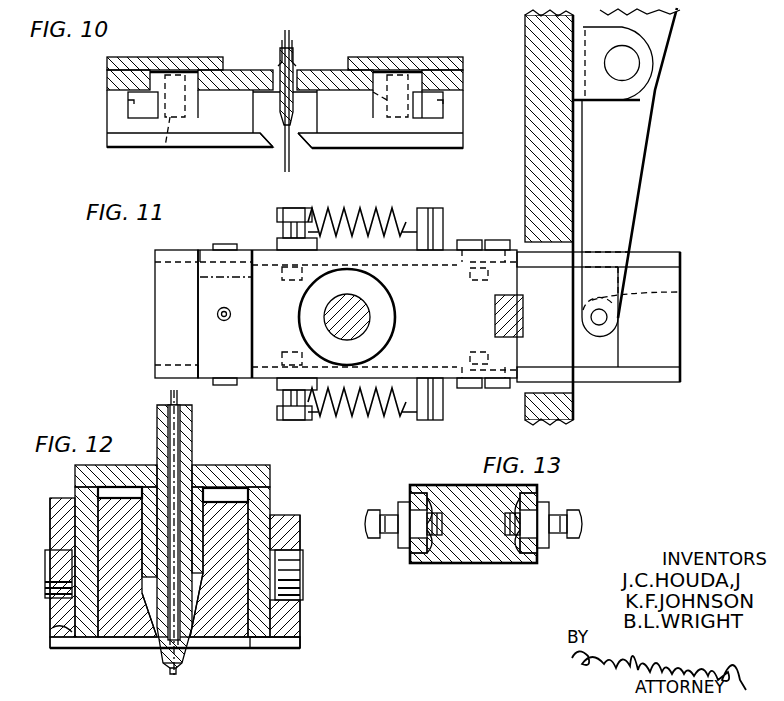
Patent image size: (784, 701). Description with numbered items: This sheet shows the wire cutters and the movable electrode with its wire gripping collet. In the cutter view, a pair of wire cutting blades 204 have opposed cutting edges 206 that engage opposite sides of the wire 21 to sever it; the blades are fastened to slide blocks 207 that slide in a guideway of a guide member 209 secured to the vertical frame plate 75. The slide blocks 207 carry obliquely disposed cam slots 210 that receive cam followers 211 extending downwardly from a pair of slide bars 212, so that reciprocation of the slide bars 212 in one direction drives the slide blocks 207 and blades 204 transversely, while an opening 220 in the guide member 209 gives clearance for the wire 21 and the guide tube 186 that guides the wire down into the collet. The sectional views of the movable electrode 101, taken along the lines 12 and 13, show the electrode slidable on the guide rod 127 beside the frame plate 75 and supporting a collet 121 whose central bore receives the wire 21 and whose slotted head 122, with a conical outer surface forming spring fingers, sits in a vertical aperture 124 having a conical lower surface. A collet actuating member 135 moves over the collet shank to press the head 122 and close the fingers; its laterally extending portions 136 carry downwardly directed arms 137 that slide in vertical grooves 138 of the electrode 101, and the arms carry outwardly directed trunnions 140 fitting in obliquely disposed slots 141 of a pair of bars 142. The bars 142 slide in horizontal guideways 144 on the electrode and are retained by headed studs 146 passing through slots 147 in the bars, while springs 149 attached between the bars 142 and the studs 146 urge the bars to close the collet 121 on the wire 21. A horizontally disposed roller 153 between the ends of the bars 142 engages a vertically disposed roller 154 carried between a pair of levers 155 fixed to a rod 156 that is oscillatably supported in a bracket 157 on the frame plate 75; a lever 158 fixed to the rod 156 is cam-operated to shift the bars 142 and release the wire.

In FIG. 11, the section line 12- 12 is at (223, 224).
In FIG. 11, the section line 13- 13 is at (293, 180).
In FIG. 10, the wire 21 is at (284, 40).
In FIG. 12, the wire 21 is at (168, 398).
In FIG. 11, the vertical frame plate 75 is at (520, 170).
In FIG. 11, the movable electrode 101 is at (153, 332).
In FIG. 12, the movable electrode 101 is at (44, 645).
In FIG. 13, the movable electrode 101 is at (478, 563).
In FIG. 11, the collet 121 is at (216, 313).
In FIG. 12, the collet 121 is at (150, 438).
In FIG. 12, the slotted head 122 is at (188, 664).
In FIG. 12, the vertical aperture 124 is at (192, 652).
In FIG. 11, the guide rod 127 is at (358, 318).
In FIG. 11, the collet actuating member 135 is at (203, 296).
In FIG. 12, the collet actuating member 135 is at (195, 496).
In FIG. 11, the laterally extending portions 136 is at (155, 280).
In FIG. 12, the laterally extending portions 136 is at (90, 470).
In FIG. 12, the arms 137 is at (88, 504).
In FIG. 12, the vertical grooves 138 is at (82, 628).
In FIG. 11, the trunnions 140 is at (216, 246).
In FIG. 12, the trunnions 140 is at (292, 590).
In FIG. 12, the obliquely disposed slots 141 is at (290, 554).
In FIG. 11, the bars 142 is at (648, 254).
In FIG. 12, the bars 142 is at (62, 648).
In FIG. 13, the bars 142 is at (540, 502).
In FIG. 13, the horizontal guideways 144 is at (438, 563).
In FIG. 11, the headed studs 146 is at (275, 212).
In FIG. 13, the headed studs 146 is at (398, 504).
In FIG. 11, the slots 147 is at (509, 316).
In FIG. 13, the slots 147 is at (420, 492).
In FIG. 11, the springs 149 is at (390, 210).
In FIG. 13, the springs 149 is at (585, 529).
In FIG. 11, the horizontally disposed roller 153 is at (665, 340).
In FIG. 11, the vertically disposed roller 154 is at (680, 292).
In FIG. 11, the levers 155 is at (625, 184).
In FIG. 11, the rod 156 is at (626, 68).
In FIG. 11, the bracket 157 is at (648, 100).
In FIG. 11, the lever 158 is at (660, 29).
In FIG. 10, the guide tube 186 is at (262, 104).
In FIG. 10, the wire cutting blades 204 is at (114, 146).
In FIG. 10, the cutting edges 206 is at (276, 150).
In FIG. 10, the slide blocks 207 is at (322, 82).
In FIG. 10, the guide member 209 is at (247, 70).
In FIG. 10, the cam slots 210 is at (128, 100).
In FIG. 10, the cam followers 211 is at (170, 135).
In FIG. 10, the slide bars 212 is at (142, 66).
In FIG. 10, the opening 220 is at (292, 46).